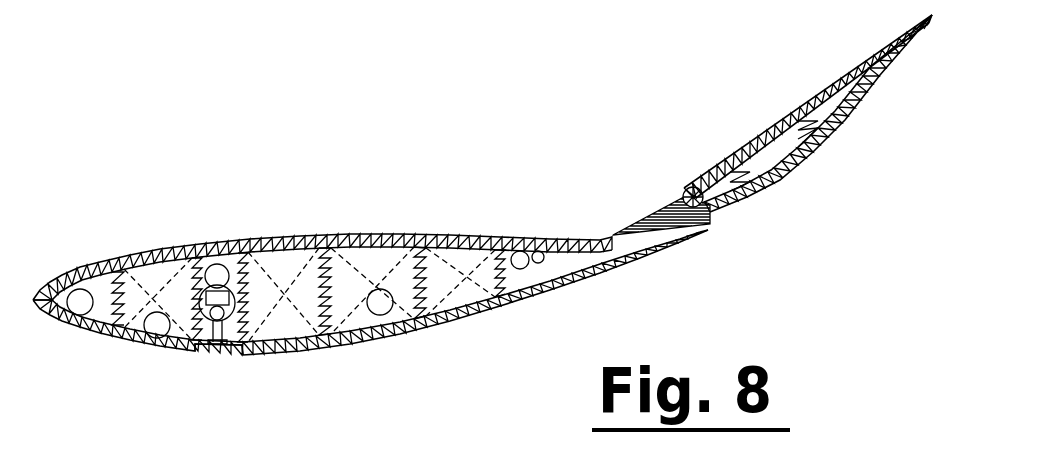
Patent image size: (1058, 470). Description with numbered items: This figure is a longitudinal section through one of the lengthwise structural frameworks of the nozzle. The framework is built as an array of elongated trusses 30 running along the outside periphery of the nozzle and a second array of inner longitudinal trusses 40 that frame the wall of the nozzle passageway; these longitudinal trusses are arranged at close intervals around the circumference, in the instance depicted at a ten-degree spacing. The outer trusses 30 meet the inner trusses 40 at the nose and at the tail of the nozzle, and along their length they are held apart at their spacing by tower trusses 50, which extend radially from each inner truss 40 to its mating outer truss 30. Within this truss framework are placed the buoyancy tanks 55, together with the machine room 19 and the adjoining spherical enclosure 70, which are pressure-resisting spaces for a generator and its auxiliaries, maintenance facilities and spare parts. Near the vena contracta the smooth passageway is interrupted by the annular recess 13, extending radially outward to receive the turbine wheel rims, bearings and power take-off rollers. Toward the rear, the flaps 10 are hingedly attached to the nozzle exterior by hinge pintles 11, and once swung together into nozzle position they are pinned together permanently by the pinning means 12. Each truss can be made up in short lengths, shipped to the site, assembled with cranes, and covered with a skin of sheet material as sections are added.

The flaps 10 is at (828, 86).
The hinge pintles 11 is at (688, 230).
The pinning means 12 is at (927, 17).
The annular recess 13 is at (196, 356).
The machine room 19 is at (220, 344).
The elongated trusses 30 is at (467, 237).
The inner longitudinal trusses 40 is at (423, 310).
The tower trusses 50 is at (281, 237).
The buoyancy tanks 55 is at (156, 330).
The spherical enclosure 70 is at (240, 247).